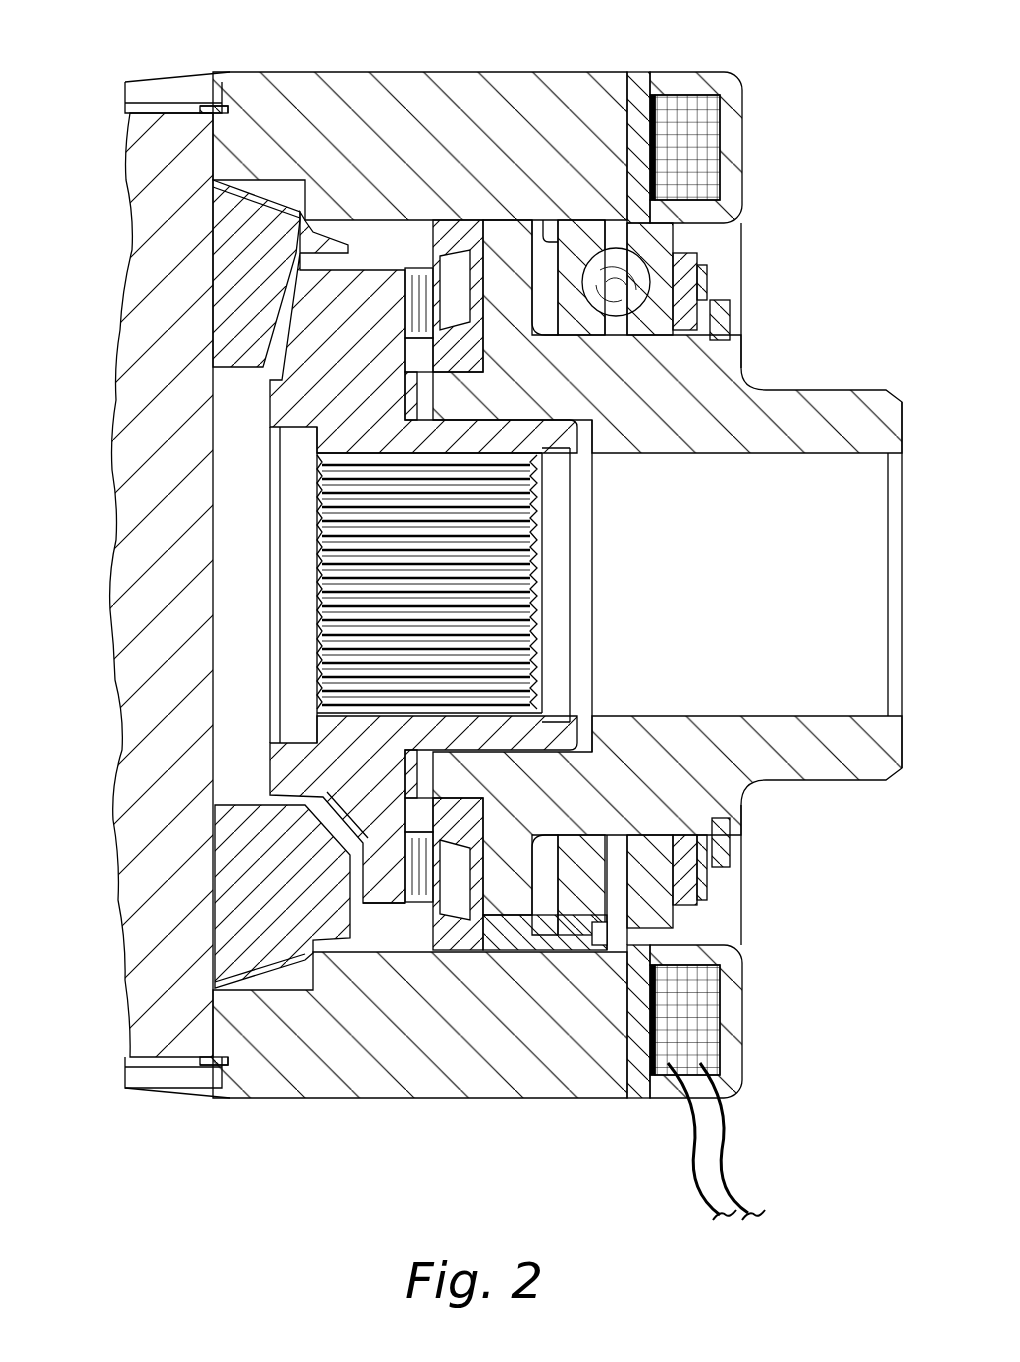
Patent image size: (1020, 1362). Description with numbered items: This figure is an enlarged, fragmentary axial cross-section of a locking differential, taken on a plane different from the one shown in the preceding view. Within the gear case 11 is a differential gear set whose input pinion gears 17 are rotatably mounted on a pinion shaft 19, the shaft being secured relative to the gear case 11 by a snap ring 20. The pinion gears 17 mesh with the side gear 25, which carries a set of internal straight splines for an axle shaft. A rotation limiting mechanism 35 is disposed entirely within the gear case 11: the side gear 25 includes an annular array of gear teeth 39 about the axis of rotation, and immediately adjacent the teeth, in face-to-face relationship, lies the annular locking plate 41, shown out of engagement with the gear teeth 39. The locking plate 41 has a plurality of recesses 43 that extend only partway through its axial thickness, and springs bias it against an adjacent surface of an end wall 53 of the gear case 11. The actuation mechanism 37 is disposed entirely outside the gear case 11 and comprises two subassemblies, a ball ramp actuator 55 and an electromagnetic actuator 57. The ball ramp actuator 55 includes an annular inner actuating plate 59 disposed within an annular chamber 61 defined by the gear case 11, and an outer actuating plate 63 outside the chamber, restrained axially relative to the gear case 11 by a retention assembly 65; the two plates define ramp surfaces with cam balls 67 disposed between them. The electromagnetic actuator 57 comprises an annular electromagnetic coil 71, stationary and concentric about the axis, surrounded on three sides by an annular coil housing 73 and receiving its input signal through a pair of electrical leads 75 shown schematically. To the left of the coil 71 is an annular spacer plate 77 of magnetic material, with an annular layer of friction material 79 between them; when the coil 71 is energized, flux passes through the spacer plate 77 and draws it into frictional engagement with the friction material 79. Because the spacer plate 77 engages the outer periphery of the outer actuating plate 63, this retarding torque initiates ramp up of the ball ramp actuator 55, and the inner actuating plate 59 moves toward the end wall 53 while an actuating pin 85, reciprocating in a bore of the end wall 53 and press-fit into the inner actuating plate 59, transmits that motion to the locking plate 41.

The gear case 11 is at (343, 72).
The input pinion gears 17 is at (255, 247).
The pinion shaft 19 is at (135, 283).
The snap ring 20 is at (205, 106).
The side gear 25 is at (290, 762).
The rotation limiting mechanism 35 is at (400, 923).
The actuation mechanism 37 is at (740, 925).
The gear teeth 39 is at (420, 285).
The annular locking plate 41 is at (470, 910).
The recesses 43 is at (445, 283).
The end wall 53 is at (507, 256).
The ball ramp actuator 55 is at (650, 343).
The electromagnetic actuator 57 is at (722, 233).
The inner actuating plate 59 is at (587, 880).
The annular chamber 61 is at (562, 244).
The outer actuating plate 63 is at (650, 853).
The retention assembly 65 is at (733, 885).
The cam balls 67 is at (620, 282).
The electromagnetic coil 71 is at (700, 1033).
The annular coil housing 73 is at (742, 143).
The electrical leads 75 is at (737, 1188).
The annular spacer plate 77 is at (637, 90).
The friction material 79 is at (632, 1040).
The actuating pin 85 is at (517, 938).